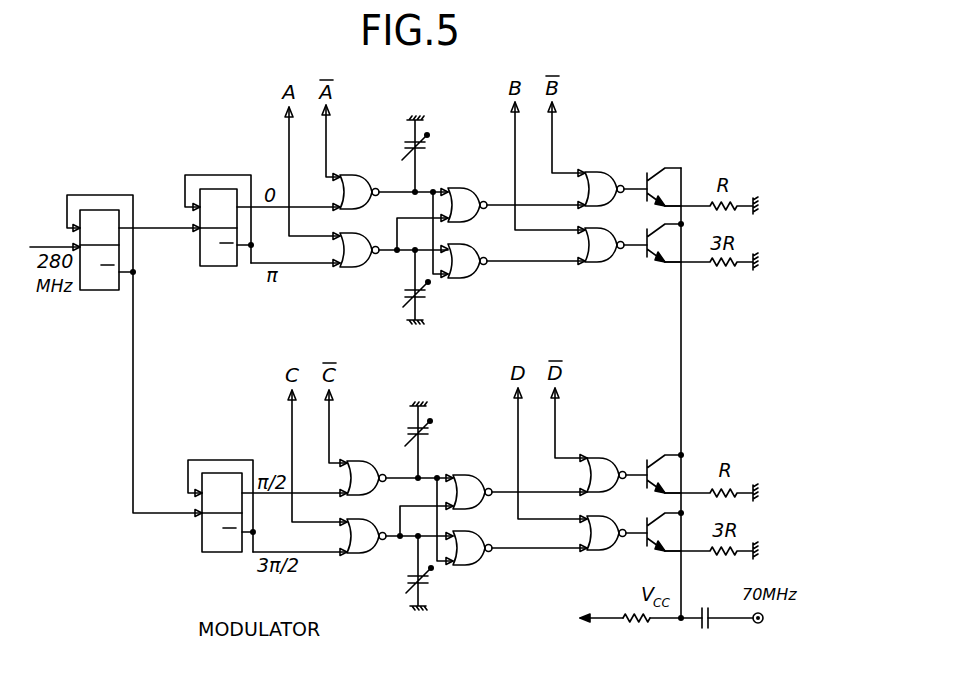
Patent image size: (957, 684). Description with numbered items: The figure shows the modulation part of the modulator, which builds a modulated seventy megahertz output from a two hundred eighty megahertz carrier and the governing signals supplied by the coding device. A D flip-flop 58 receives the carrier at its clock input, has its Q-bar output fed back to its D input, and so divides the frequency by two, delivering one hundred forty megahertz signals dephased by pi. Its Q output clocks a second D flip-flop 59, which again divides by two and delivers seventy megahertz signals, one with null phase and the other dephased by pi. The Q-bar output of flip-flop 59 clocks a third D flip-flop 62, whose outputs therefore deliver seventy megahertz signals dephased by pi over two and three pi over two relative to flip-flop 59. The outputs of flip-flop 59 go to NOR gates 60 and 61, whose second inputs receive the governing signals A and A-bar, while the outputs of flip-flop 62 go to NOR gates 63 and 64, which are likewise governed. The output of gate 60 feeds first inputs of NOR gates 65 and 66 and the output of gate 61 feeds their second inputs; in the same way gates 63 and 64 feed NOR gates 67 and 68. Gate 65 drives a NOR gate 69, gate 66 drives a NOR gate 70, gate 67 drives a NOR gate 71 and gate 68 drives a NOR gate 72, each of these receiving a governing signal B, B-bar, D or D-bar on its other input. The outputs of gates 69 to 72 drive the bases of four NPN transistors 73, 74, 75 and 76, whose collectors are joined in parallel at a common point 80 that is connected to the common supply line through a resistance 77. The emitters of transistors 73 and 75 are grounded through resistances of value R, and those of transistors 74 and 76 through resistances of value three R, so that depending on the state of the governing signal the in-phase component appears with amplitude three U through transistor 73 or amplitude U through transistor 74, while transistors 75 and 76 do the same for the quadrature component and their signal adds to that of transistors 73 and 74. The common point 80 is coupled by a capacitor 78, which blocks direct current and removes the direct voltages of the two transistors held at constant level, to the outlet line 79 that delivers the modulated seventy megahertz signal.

The D flip-flop 58 is at (105, 291).
The D flip-flop 59 is at (215, 267).
The D flip-flop 62 is at (215, 553).
The NOR gate 60 is at (354, 175).
The NOR gate 61 is at (353, 267).
The NOR gate 63 is at (359, 461).
The NOR gate 64 is at (360, 553).
The NOR gate 65 is at (468, 188).
The NOR gate 66 is at (472, 278).
The NOR gate 67 is at (472, 475).
The NOR gate 68 is at (473, 565).
The NOR gate 69 is at (601, 172).
The NOR gate 70 is at (604, 262).
The NOR gate 71 is at (608, 458).
The NOR gate 72 is at (606, 550).
The NPN transistor 73 is at (645, 190).
The NPN transistor 74 is at (647, 257).
The NPN transistor 75 is at (645, 477).
The NPN transistor 76 is at (647, 545).
The resistance 77 is at (636, 622).
The capacitor 78 is at (704, 630).
The outlet line 79 is at (759, 624).
The common point 80 is at (681, 622).